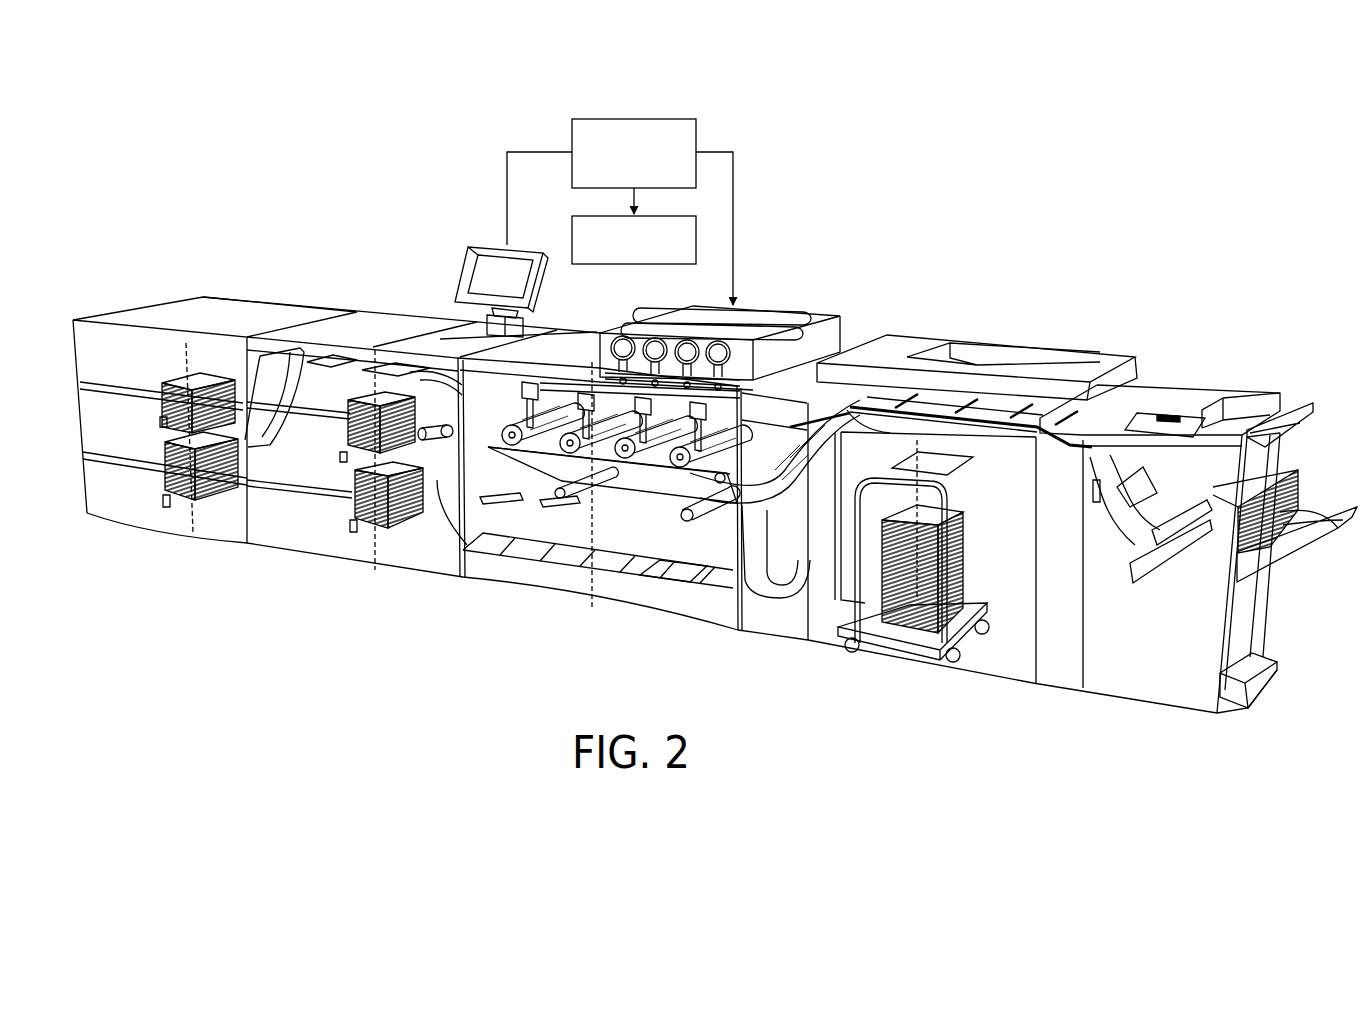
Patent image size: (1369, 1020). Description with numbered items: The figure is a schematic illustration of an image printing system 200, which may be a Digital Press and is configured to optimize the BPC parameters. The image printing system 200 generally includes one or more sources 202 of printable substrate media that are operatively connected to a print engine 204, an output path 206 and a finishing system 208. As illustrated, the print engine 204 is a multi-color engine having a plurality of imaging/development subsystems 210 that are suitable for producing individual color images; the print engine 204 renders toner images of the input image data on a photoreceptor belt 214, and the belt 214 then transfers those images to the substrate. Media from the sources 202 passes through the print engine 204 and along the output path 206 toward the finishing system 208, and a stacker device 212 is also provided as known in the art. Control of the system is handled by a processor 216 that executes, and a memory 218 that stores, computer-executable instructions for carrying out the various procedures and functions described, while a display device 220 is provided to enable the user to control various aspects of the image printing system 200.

The image printing system 200 is at (968, 232).
The sources of printable substrate media 202 is at (323, 467).
The print engine 204 is at (495, 413).
The output path 206 is at (440, 540).
The finishing system 208 is at (1112, 575).
The imaging/development subsystems 210 is at (762, 320).
The stacker device 212 is at (870, 630).
The photoreceptor belt 214 is at (628, 488).
The processor 216 is at (633, 117).
The memory 218 is at (633, 265).
The display device 220 is at (458, 270).